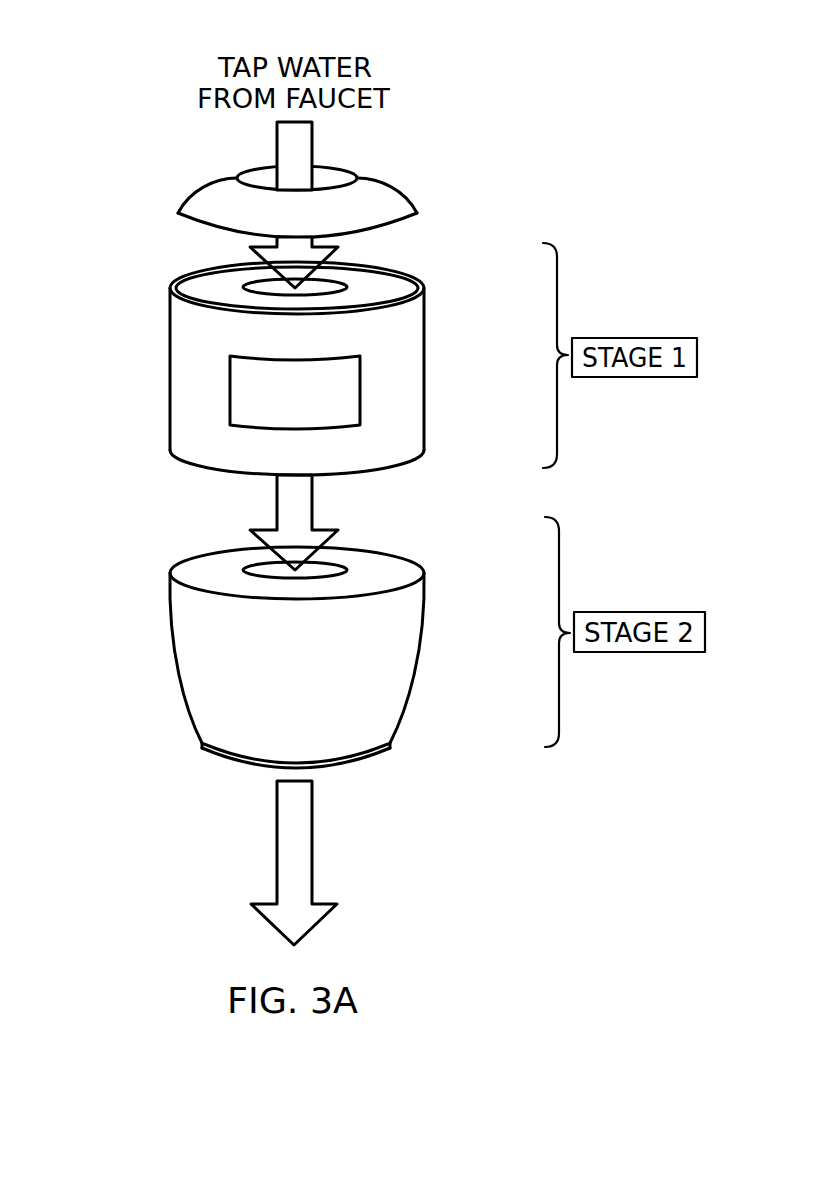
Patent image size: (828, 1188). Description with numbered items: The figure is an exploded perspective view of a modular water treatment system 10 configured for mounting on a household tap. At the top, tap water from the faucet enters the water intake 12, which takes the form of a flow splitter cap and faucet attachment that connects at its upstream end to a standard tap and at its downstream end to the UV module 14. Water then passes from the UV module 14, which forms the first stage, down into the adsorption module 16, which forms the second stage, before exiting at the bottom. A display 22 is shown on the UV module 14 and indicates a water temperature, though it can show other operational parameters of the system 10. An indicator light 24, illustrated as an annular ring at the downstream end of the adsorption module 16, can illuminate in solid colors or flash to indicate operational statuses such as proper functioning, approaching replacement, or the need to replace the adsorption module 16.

The modular water treatment system 10 is at (467, 122).
The water intake 12 is at (400, 193).
The UV module 14 is at (168, 392).
The adsorption module 16 is at (167, 640).
The display 22 is at (395, 388).
The indicator light 24 is at (395, 754).